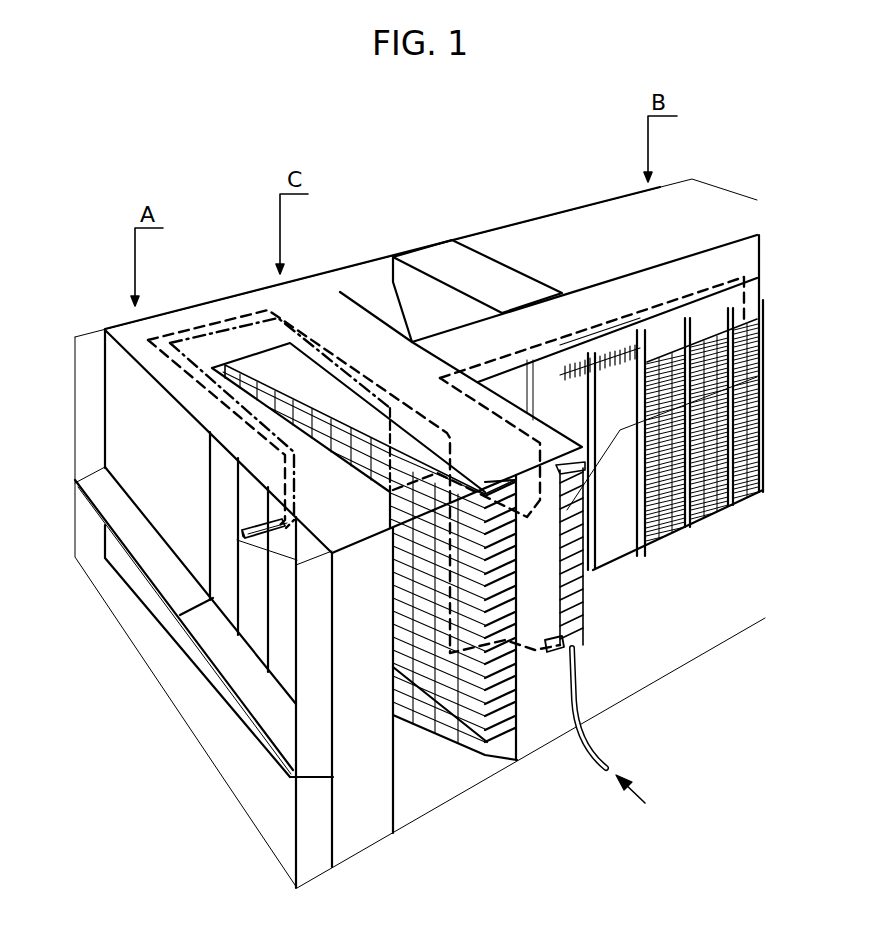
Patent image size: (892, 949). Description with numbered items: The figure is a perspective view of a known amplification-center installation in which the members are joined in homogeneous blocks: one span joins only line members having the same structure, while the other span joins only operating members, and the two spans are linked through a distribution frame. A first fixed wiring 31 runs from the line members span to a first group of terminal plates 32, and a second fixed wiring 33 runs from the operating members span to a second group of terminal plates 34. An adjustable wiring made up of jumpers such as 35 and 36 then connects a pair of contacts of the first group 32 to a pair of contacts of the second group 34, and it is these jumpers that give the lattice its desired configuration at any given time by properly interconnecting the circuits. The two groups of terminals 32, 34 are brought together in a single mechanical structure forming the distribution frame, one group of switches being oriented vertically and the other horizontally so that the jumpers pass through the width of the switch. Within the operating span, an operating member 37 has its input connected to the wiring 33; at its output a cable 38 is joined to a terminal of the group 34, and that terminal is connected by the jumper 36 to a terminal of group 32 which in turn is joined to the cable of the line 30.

The line 30 is at (603, 752).
The first fixed wiring 31 is at (615, 322).
The first group of terminal plates 32 is at (580, 604).
The second fixed wiring 33 is at (233, 318).
The second group of terminal plates 34 is at (495, 725).
The jumper 35 is at (498, 482).
The jumper 36 is at (542, 650).
The operating member 37 is at (240, 537).
The cable 38 is at (190, 324).